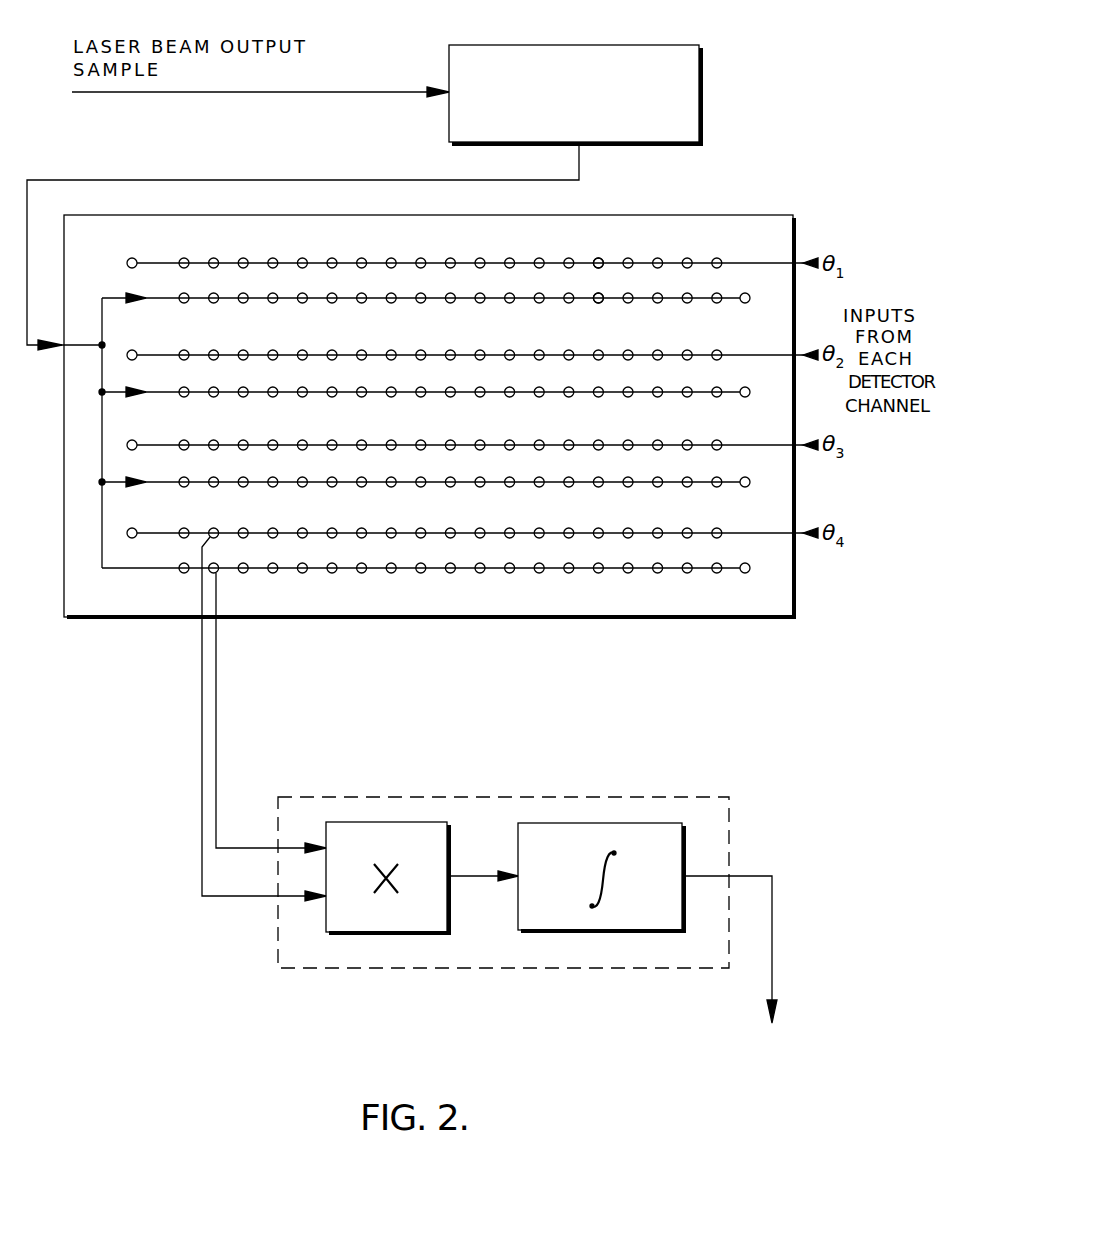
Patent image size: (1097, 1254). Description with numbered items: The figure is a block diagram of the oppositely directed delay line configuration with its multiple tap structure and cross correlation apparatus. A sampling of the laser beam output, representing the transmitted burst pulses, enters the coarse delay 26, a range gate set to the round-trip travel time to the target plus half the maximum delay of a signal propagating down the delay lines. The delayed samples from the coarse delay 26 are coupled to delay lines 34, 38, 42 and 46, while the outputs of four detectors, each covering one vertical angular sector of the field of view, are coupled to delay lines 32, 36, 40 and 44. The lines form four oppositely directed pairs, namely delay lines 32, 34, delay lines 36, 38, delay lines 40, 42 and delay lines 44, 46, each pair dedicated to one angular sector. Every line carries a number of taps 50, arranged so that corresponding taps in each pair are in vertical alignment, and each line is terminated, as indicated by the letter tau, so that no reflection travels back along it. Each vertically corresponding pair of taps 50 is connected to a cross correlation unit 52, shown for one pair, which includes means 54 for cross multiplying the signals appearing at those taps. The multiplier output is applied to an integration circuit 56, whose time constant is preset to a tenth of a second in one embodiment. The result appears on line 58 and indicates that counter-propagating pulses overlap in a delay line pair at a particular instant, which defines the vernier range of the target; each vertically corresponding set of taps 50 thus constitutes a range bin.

The coarse delay 26 is at (628, 45).
The delay line 32 is at (158, 262).
The delay line 34 is at (146, 297).
The delay line 36 is at (152, 353).
The delay line 38 is at (153, 390).
The delay line 40 is at (153, 443).
The delay line 42 is at (155, 480).
The delay line 44 is at (155, 531).
The delay line 46 is at (145, 567).
The taps 50 is at (602, 295).
The cross correlation unit 52 is at (600, 797).
The means for cross multiplying 54 is at (423, 822).
The integration circuit 56 is at (668, 823).
The line 58 is at (772, 955).